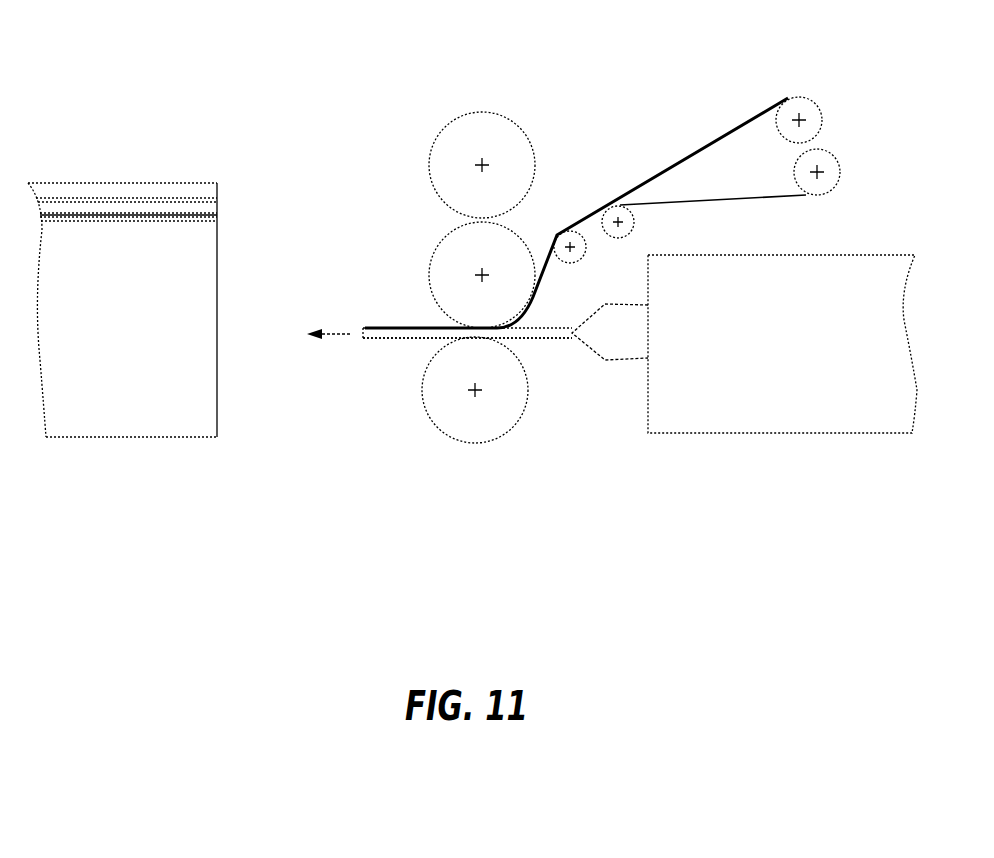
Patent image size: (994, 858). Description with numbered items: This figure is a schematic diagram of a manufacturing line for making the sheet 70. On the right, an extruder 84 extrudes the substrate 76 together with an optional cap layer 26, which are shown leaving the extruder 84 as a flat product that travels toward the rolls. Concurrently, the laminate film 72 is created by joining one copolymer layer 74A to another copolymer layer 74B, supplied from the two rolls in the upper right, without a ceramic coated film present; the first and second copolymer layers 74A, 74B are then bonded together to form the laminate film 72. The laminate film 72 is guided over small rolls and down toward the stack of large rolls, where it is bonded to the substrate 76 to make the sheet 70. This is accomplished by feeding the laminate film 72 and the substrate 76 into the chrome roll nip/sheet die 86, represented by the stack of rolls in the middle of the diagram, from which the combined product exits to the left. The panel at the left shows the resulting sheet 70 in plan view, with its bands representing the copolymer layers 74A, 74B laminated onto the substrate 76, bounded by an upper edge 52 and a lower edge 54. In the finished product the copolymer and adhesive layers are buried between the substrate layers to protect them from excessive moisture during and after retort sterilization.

The sheet 70 is at (182, 72).
The top edge of web 52 is at (114, 183).
The bottom edge of web 54 is at (114, 437).
The copolymer layer 74A is at (222, 184).
The copolymer layer 74B is at (222, 203).
The substrate 76 is at (218, 310).
The laminate film 72 is at (584, 212).
The cap layer 26 is at (537, 337).
The extruder 84 is at (778, 433).
The chrome roll nip/sheet die 86 is at (436, 432).